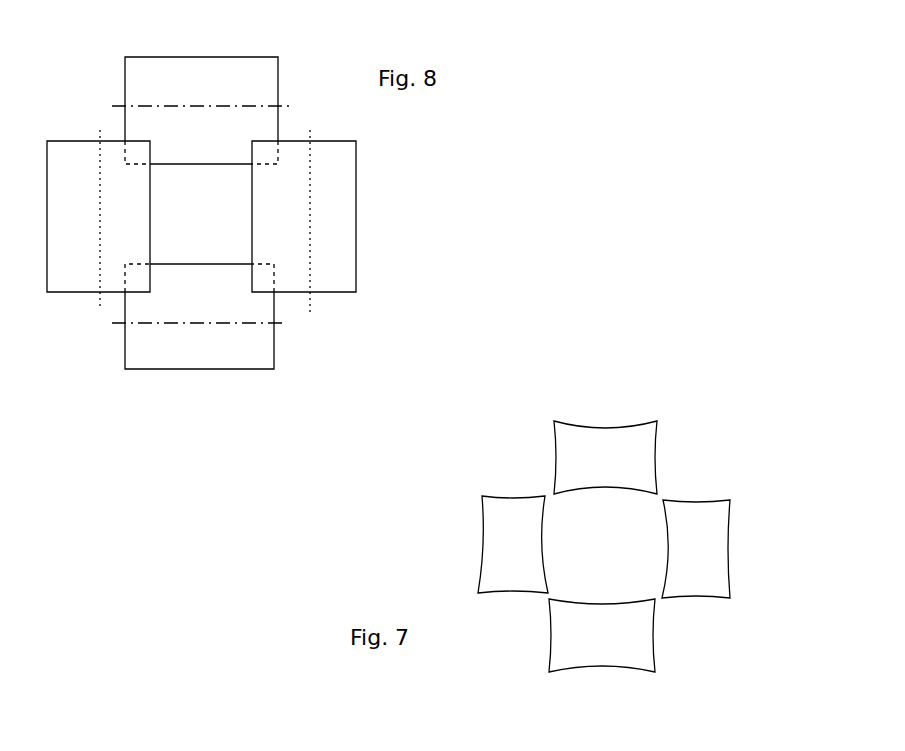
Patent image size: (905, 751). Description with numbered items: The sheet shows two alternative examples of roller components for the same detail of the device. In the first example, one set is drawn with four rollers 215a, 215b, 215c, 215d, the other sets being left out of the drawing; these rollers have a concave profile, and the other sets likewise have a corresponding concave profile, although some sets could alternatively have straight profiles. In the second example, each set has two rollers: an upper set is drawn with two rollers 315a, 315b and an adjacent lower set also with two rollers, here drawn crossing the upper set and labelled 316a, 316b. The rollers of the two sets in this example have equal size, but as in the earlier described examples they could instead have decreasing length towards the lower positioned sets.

In FIG. 7, the roller 215a is at (493, 552).
In FIG. 7, the roller 215b is at (643, 646).
In FIG. 7, the roller 215c is at (707, 512).
In FIG. 7, the roller 215d is at (645, 437).
In FIG. 8, the roller 315a is at (73, 284).
In FIG. 8, the roller 315b is at (345, 236).
In FIG. 8, the first cross member 316a is at (186, 358).
In FIG. 8, the second cross member 316b is at (210, 63).